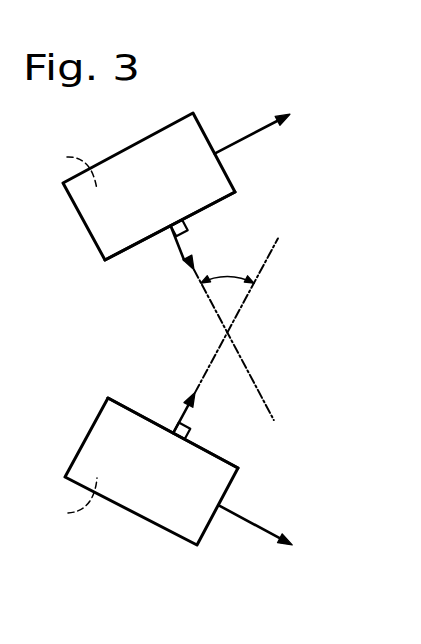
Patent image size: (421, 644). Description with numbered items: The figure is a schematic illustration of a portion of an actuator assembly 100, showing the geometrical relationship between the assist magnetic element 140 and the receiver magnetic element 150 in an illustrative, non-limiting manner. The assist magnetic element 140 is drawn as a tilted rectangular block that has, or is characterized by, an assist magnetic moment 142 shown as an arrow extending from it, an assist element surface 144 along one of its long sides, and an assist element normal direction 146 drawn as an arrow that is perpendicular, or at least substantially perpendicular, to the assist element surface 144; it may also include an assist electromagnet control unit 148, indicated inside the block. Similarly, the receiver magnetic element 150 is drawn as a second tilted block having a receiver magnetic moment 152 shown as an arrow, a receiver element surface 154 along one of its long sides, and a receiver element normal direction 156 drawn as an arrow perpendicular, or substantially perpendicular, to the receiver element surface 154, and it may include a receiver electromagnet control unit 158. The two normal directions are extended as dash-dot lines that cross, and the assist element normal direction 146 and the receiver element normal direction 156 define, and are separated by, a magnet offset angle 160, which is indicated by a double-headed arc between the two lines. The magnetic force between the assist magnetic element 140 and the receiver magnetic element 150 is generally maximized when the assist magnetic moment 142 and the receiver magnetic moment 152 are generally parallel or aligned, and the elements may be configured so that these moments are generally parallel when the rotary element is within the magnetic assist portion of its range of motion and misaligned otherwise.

The system 100 is at (88, 121).
The assist magnetic element 140 is at (175, 537).
The assist magnetic moment 142 is at (250, 521).
The assist element surface 144 is at (121, 403).
The assist element normal direction 146 is at (183, 412).
The assist electromagnet control unit 148 is at (61, 504).
The receiver magnetic element 150 is at (176, 118).
The receiver magnetic moment 152 is at (242, 137).
The receiver element surface 154 is at (117, 258).
The receiver element normal direction 156 is at (181, 248).
The receiver electromagnet control unit 158 is at (60, 167).
The magnet offset angle 160 is at (228, 277).